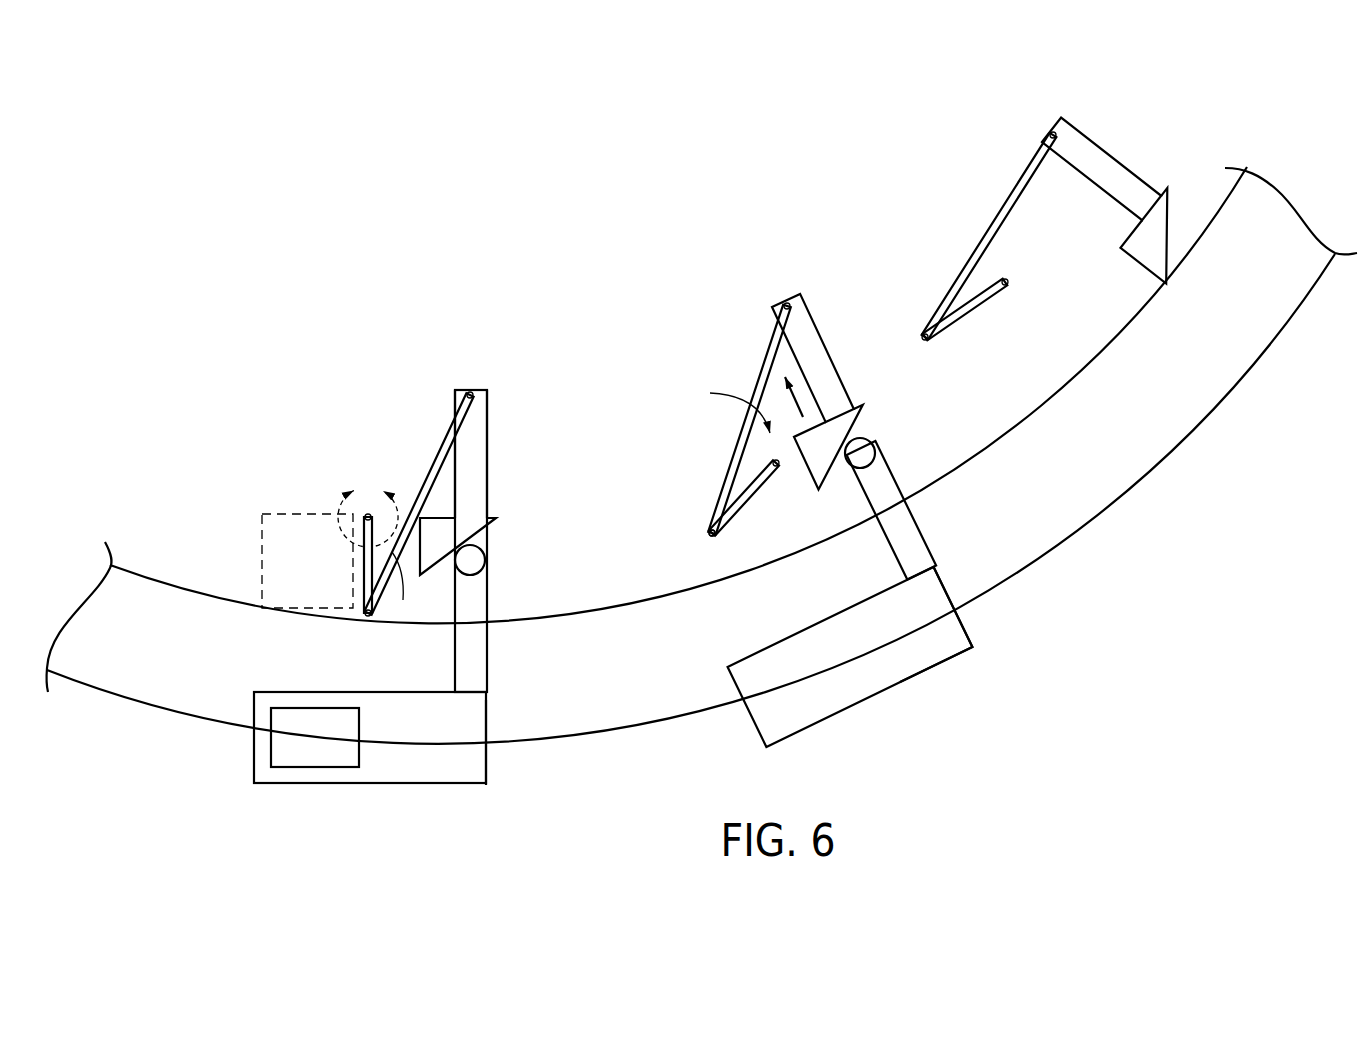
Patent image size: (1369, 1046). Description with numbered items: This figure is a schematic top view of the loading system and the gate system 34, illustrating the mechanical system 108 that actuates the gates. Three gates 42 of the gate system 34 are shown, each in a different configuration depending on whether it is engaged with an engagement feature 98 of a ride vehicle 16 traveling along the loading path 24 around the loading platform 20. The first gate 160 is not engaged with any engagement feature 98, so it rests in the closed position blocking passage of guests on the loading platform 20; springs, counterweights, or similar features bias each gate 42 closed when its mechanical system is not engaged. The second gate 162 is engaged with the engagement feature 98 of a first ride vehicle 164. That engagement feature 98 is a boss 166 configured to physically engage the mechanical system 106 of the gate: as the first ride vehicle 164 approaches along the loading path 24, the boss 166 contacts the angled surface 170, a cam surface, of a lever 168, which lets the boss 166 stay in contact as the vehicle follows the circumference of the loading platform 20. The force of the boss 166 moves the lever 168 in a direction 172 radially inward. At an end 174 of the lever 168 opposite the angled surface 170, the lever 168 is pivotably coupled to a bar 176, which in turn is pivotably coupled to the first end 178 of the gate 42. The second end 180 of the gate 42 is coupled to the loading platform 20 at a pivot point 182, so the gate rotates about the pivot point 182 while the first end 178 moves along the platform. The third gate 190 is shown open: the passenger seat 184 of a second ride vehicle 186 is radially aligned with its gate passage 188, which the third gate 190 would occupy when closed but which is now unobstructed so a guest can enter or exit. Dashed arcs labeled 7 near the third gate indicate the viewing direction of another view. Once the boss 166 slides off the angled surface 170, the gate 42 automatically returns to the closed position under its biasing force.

The section view direction 7 is at (369, 503).
The ride vehicle 16 is at (390, 783).
The loading platform 20 is at (552, 280).
The loading path 24 is at (705, 707).
The gate system 34 is at (675, 100).
The gate 42 is at (368, 562).
The engagement feature 98 is at (470, 663).
The mechanical system 106 is at (375, 383).
The mechanical system 108 is at (453, 318).
The first gate 160 is at (960, 320).
The second gate 162 is at (740, 520).
The first ride vehicle 164 is at (922, 670).
The boss 166 is at (473, 600).
The lever 168 is at (477, 475).
The angled surface 170 is at (485, 533).
The direction 172 is at (805, 397).
The end of the lever 174 is at (477, 377).
The bar 176 is at (433, 467).
The first end of the gate 178 is at (700, 527).
The second end of the gate 180 is at (581, 501).
The pivot point 182 is at (368, 515).
The passenger seat 184 is at (312, 767).
The second ride vehicle 186 is at (487, 715).
The gate passage 188 is at (260, 560).
The third gate 190 is at (358, 590).